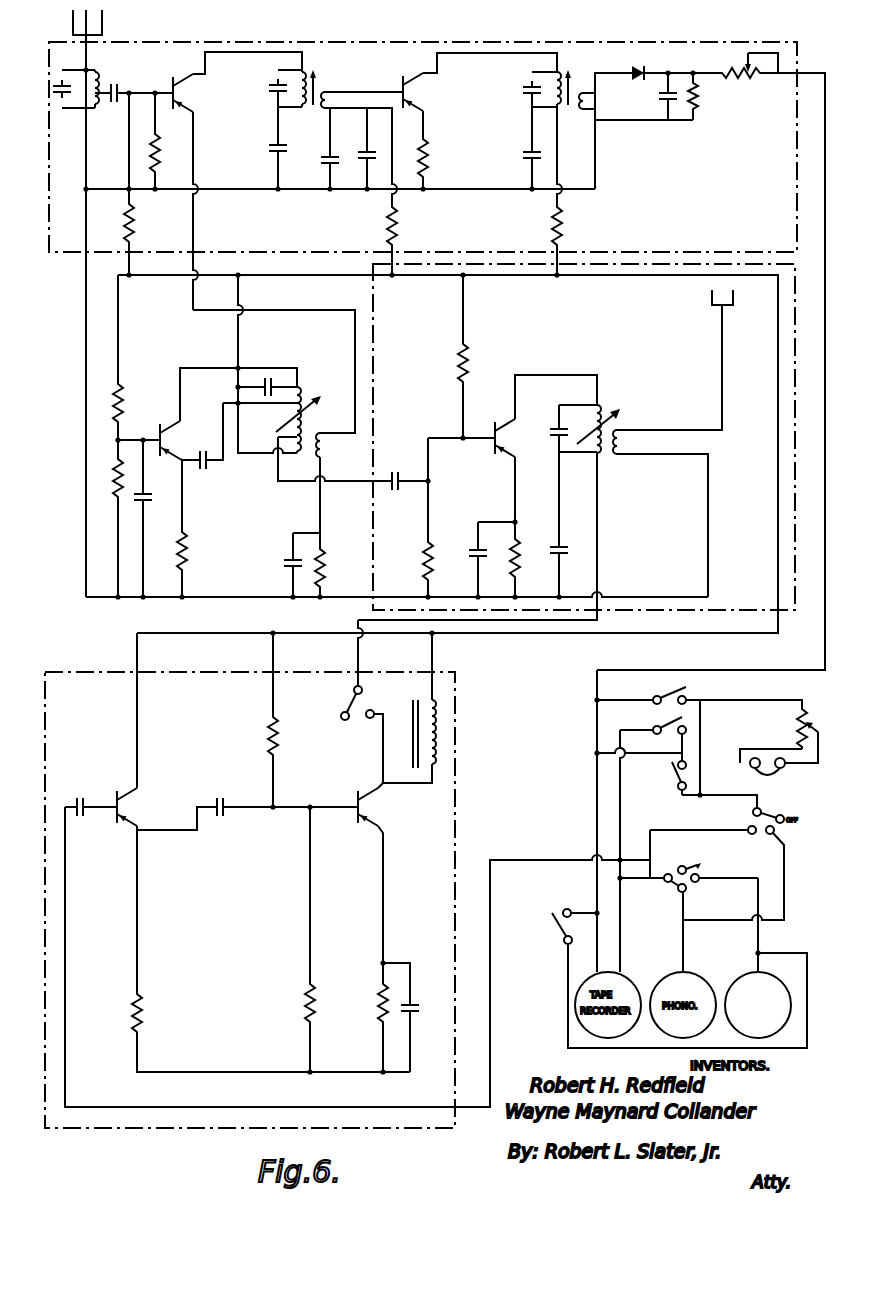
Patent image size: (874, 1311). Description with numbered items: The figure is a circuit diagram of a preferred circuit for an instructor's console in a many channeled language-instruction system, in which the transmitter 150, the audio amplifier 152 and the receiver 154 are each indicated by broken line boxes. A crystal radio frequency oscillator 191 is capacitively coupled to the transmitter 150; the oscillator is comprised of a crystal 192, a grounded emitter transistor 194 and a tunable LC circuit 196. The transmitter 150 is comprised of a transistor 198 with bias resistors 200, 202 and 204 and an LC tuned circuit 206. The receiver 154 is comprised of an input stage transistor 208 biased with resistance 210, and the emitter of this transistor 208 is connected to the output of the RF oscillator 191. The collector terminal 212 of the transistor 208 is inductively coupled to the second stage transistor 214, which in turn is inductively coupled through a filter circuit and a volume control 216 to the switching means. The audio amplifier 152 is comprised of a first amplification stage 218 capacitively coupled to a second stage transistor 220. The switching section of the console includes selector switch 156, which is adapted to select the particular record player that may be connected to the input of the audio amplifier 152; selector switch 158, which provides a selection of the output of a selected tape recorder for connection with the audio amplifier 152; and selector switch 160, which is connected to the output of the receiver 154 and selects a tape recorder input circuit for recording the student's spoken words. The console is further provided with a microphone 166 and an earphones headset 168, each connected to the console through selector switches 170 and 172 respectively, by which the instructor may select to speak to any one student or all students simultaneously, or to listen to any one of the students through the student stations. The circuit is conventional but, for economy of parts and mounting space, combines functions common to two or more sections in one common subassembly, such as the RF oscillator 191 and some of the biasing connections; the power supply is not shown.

The transmitter 150 is at (631, 345).
The audio amplifier 152 is at (172, 1126).
The receiver 154 is at (714, 211).
The selector switch 156 is at (672, 882).
The selector switch 158 is at (670, 776).
The selector switch 160 is at (655, 728).
The microphone 166 is at (768, 1030).
The earphones headset 168 is at (777, 769).
The selector switch 170 is at (560, 926).
The selector switch 172 is at (653, 697).
The crystal radio frequency oscillator 191 is at (248, 563).
The crystal 192 is at (205, 452).
The grounded emitter transistor 194 is at (160, 428).
The tunable LC circuit 196 is at (301, 390).
The transistor 198 is at (505, 427).
The bias resistor 200 is at (461, 360).
The bias resistor 202 is at (432, 566).
The bias resistor 204 is at (521, 553).
The LC tuned circuit 206 is at (607, 420).
The input stage transistor 208 is at (194, 95).
The resistance 210 is at (158, 150).
The collector terminal 212 is at (212, 58).
The second stage transistor 214 is at (424, 94).
The volume control 216 is at (746, 84).
The first amplification stage 218 is at (126, 790).
The second stage transistor 220 is at (352, 818).